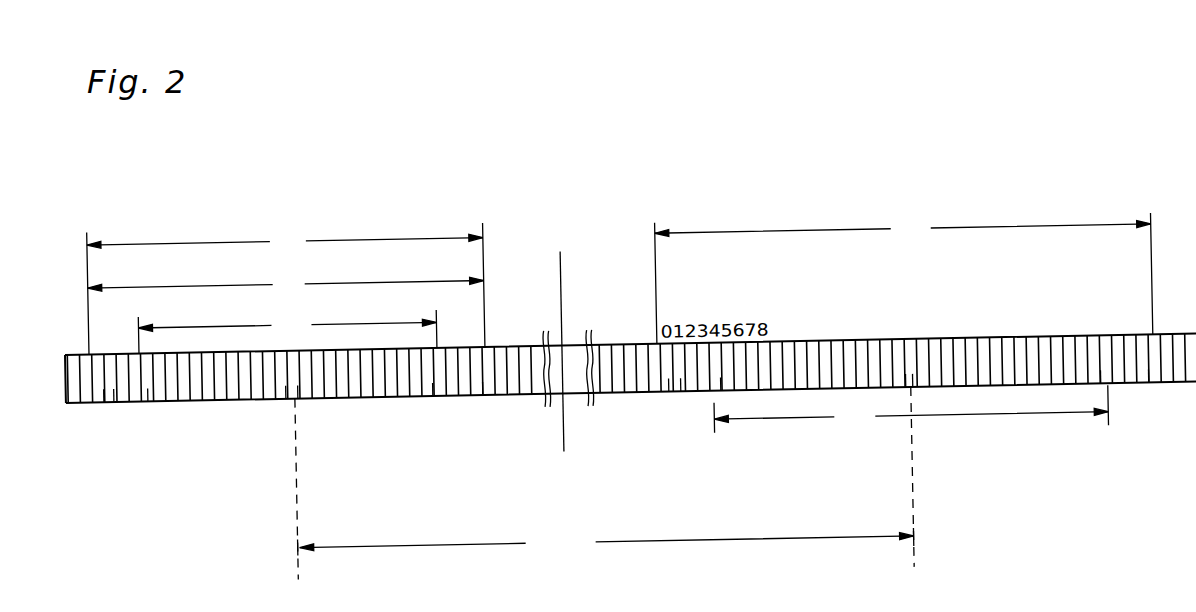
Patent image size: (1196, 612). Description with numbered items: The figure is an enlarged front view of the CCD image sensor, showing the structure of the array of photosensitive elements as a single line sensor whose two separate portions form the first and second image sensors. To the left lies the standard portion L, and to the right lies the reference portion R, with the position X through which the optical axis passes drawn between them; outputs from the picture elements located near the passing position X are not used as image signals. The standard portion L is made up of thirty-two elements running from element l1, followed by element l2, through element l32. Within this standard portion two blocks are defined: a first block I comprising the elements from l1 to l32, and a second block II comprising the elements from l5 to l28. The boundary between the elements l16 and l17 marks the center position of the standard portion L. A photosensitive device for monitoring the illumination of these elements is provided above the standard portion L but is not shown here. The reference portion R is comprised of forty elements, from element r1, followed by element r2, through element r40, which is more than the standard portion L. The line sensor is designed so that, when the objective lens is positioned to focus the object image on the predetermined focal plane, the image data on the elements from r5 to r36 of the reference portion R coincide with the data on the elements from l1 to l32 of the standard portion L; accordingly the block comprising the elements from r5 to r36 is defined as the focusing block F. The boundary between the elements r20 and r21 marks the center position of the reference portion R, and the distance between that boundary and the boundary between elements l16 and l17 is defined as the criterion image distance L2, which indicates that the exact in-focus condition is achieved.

The first element of standard portion l1 is at (103, 403).
The second element of standard portion l2 is at (113, 403).
The fifth element of standard portion l5 is at (147, 403).
The sixteenth element of standard portion l16 is at (285, 403).
The seventeenth element of standard portion l17 is at (297, 403).
The twenty-eighth element of standard portion l28 is at (432, 403).
The thirty-second element of standard portion l32 is at (482, 403).
The first element of reference portion r1 is at (668, 403).
The second element of reference portion r2 is at (680, 403).
The fifth element of reference portion r5 is at (720, 403).
The twentieth element of reference portion r20 is at (905, 403).
The twenty-first element of reference portion r21 is at (912, 403).
The thirty-sixth element of reference portion r36 is at (1100, 403).
The fortieth element of reference portion r40 is at (1148, 403).
The standard portion L is at (286, 288).
The first block I is at (285, 283).
The second block II is at (287, 331).
The optical axis passing position X is at (558, 337).
The reference portion R is at (904, 277).
The focusing block F is at (911, 409).
The criterion image distance L2 is at (604, 483).